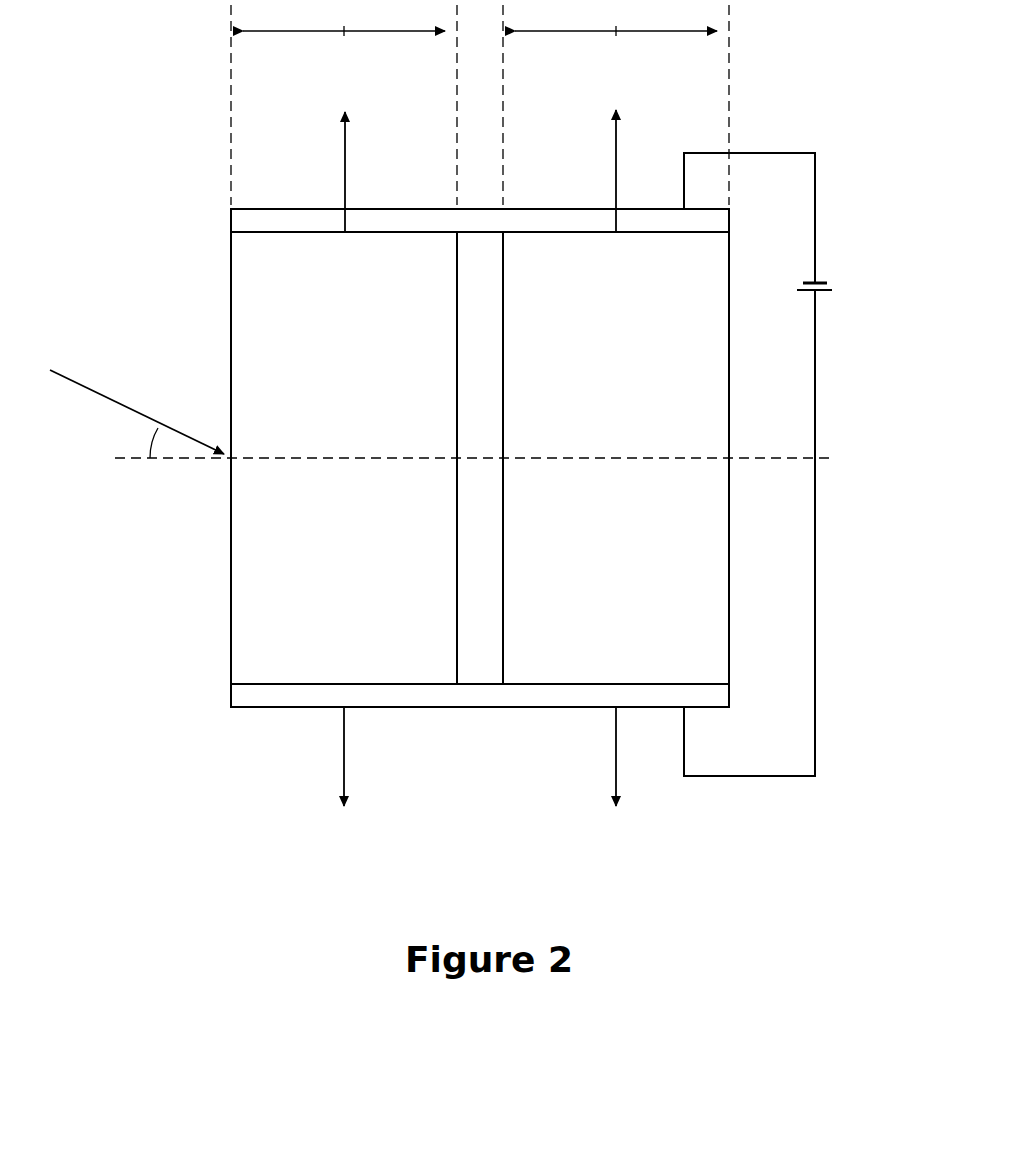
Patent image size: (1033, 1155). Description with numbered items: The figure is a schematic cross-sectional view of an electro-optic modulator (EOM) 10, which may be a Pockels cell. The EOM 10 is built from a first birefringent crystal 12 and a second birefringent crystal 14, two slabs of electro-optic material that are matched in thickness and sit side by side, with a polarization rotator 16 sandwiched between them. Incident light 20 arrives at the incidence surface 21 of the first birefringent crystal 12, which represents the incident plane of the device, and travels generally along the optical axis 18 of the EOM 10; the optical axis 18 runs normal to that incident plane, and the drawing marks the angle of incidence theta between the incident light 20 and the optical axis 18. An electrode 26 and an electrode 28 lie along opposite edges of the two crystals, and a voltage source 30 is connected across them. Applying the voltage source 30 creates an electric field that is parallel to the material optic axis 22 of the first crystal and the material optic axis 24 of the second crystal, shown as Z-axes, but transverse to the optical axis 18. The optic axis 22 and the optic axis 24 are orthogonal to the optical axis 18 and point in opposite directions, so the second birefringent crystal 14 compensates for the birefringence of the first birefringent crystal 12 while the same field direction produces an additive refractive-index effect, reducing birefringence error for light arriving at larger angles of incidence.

The electro-optic modulator 10 is at (214, 168).
The first birefringent crystal 12 is at (255, 640).
The second birefringent crystal 14 is at (695, 593).
The polarization rotator 16 is at (470, 660).
The optical axis 18 is at (172, 462).
The incident light 20 is at (118, 400).
The incidence surface 21 is at (222, 217).
The optic axis of first EO material 22 is at (618, 130).
The optic axis of second EO material 24 is at (343, 777).
The electrode 26 is at (383, 222).
The electrode 28 is at (278, 695).
The voltage source 30 is at (846, 305).